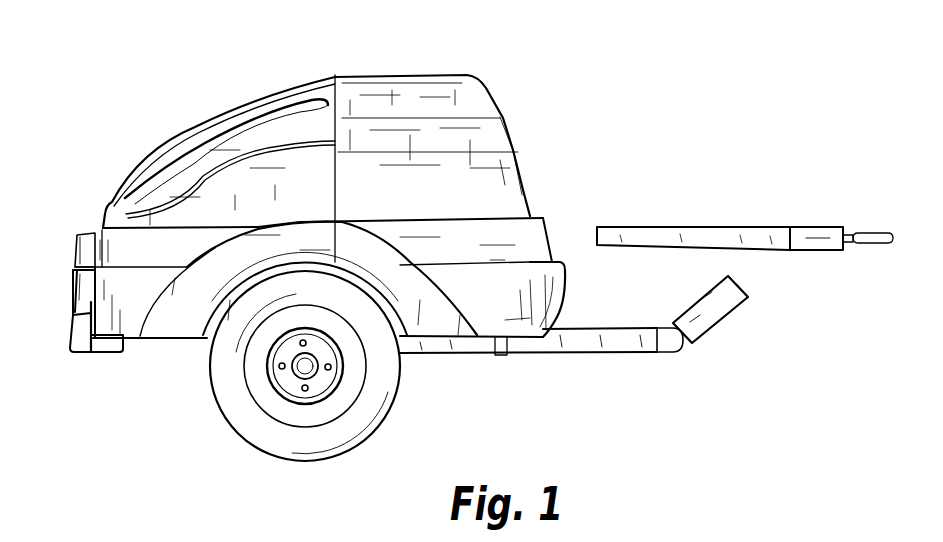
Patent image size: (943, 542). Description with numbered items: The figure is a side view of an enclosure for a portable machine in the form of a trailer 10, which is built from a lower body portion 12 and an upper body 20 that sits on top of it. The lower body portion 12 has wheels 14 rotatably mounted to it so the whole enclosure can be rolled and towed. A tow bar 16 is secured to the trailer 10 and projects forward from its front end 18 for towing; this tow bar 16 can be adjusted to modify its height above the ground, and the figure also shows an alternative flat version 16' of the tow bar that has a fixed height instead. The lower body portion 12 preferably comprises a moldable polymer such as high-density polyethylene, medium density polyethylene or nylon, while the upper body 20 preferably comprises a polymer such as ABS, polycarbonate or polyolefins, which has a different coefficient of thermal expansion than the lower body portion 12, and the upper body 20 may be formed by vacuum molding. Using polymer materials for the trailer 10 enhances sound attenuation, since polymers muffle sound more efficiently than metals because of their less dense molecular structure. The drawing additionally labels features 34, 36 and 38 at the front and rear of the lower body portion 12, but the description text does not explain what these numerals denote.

The trailer 10 is at (104, 56).
The lower body portion 12 is at (116, 236).
The wheels 14 is at (228, 397).
The tow bar 16 is at (574, 353).
The flat version of tow bar 16' is at (745, 204).
The front end 18 is at (571, 221).
The upper body 20 is at (441, 61).
The front panel 34 is at (565, 298).
The bumper 36 is at (82, 325).
The tailgate 38 is at (57, 298).